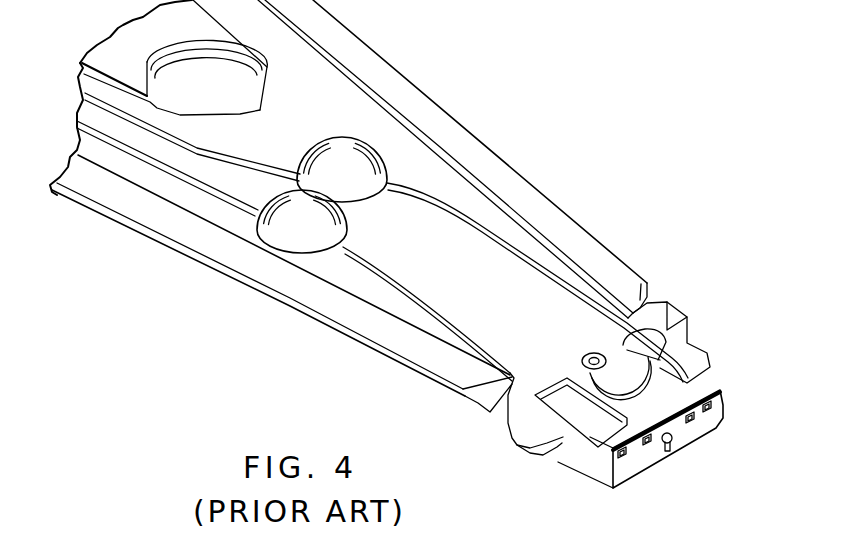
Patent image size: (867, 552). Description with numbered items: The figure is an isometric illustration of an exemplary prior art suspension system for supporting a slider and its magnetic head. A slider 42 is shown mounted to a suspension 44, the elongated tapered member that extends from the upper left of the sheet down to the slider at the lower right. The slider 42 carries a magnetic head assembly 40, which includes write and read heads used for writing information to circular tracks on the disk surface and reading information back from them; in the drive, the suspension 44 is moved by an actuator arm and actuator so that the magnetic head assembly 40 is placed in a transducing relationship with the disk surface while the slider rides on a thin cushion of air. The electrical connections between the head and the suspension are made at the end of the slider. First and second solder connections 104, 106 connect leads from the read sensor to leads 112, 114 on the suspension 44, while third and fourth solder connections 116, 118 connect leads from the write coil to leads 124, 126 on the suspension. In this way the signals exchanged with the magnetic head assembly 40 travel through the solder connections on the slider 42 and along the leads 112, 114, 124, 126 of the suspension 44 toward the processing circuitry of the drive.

The suspension 44 is at (497, 146).
The lead 114 is at (550, 270).
The lead 126 is at (470, 227).
The lead 124 is at (398, 278).
The lead 112 is at (383, 278).
The first solder connection 104 is at (613, 475).
The slider 42 is at (540, 470).
The second solder connection 106 is at (715, 404).
The fourth solder connection 118 is at (690, 423).
The third solder connection 116 is at (648, 442).
The magnetic head assembly 40 is at (668, 462).